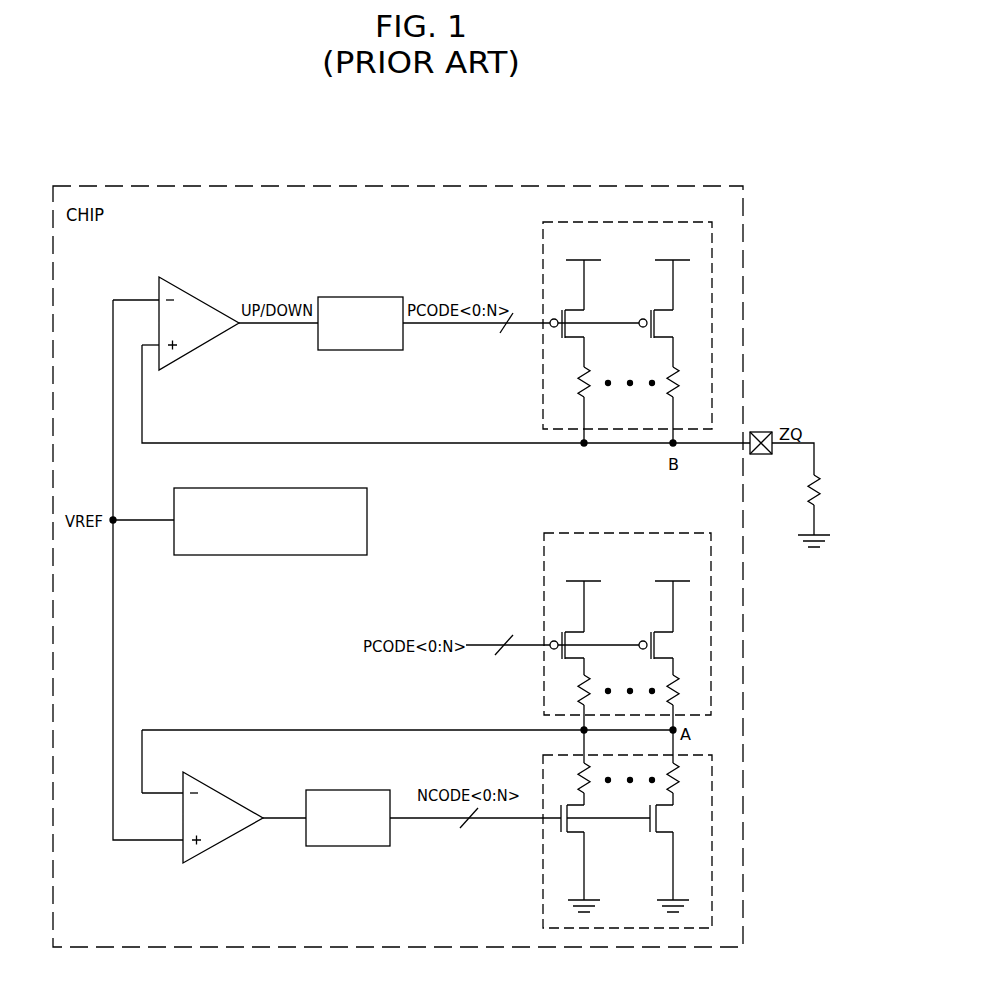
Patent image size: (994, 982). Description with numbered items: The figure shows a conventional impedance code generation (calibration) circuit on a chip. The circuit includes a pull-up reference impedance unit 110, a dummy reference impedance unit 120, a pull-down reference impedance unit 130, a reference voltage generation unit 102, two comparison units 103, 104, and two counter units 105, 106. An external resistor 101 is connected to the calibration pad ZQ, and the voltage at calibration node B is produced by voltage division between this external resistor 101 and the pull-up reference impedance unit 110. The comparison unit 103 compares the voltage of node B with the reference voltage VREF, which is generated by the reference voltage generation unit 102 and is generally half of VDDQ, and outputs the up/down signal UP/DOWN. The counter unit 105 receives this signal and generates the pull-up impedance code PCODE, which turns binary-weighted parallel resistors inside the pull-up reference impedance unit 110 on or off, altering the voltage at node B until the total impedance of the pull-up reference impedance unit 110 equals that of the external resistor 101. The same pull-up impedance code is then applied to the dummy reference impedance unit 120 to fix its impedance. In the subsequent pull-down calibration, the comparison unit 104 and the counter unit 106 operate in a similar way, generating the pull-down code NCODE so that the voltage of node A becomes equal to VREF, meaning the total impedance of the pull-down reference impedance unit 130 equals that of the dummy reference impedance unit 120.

The external resistor 101 is at (822, 493).
The reference voltage generation unit 102 is at (332, 488).
The comparison unit 103 is at (198, 300).
The comparison unit 104 is at (224, 793).
The counter unit 105 is at (370, 297).
The counter unit 106 is at (362, 790).
The pull-up reference impedance unit 110 is at (660, 222).
The dummy reference impedance unit 120 is at (660, 533).
The pull-down reference impedance unit 130 is at (698, 757).